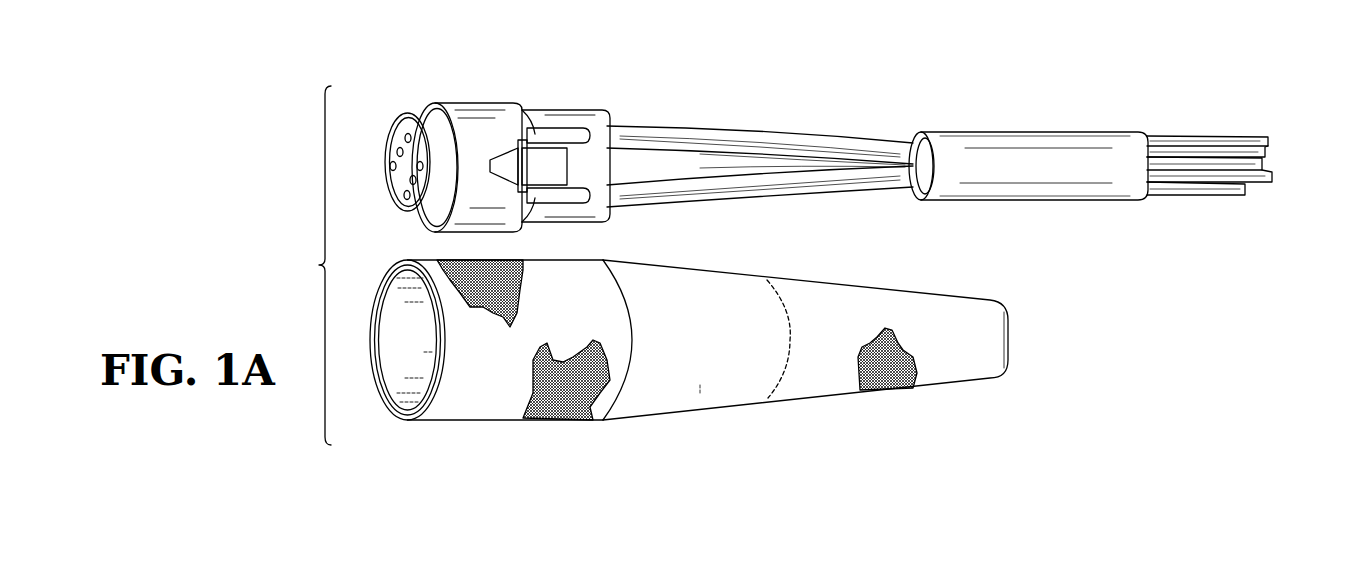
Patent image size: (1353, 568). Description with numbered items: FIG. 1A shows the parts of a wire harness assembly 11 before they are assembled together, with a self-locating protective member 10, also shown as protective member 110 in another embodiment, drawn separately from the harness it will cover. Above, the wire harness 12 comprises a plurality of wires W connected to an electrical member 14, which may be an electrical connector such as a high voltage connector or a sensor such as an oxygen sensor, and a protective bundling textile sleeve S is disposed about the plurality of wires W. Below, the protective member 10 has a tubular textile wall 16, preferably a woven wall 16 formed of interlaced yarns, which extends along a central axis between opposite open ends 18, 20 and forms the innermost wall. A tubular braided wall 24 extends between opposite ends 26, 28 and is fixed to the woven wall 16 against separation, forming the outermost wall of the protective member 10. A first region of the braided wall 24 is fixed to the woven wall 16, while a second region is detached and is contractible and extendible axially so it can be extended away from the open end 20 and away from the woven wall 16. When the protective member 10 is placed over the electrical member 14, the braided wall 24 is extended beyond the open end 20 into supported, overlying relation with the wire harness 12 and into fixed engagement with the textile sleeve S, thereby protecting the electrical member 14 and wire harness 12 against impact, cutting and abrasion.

The self-locating protective member 10 is at (950, 410).
The protective member 110 is at (707, 328).
The wire harness assembly 11 is at (312, 265).
The wire harness 12 is at (1095, 82).
The electrical member 14 is at (472, 97).
The tubular textile wall 16 is at (692, 378).
The open end 18 is at (387, 397).
The open end 20 is at (785, 308).
The tubular braided wall 24 is at (925, 303).
The end of braided wall 26 is at (392, 263).
The end of braided wall 28 is at (1008, 328).
The protective bundling textile sleeve S is at (982, 153).
The wires W is at (702, 137).